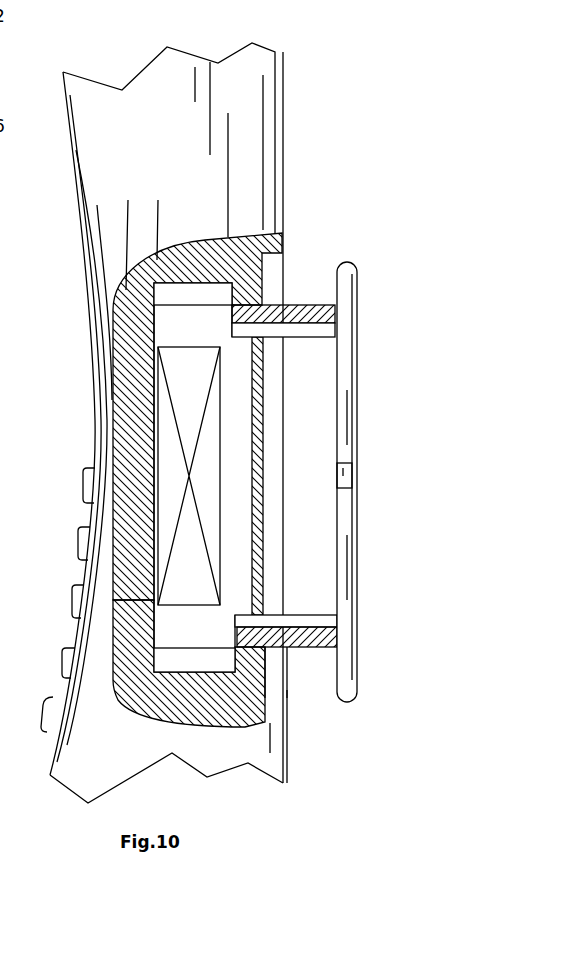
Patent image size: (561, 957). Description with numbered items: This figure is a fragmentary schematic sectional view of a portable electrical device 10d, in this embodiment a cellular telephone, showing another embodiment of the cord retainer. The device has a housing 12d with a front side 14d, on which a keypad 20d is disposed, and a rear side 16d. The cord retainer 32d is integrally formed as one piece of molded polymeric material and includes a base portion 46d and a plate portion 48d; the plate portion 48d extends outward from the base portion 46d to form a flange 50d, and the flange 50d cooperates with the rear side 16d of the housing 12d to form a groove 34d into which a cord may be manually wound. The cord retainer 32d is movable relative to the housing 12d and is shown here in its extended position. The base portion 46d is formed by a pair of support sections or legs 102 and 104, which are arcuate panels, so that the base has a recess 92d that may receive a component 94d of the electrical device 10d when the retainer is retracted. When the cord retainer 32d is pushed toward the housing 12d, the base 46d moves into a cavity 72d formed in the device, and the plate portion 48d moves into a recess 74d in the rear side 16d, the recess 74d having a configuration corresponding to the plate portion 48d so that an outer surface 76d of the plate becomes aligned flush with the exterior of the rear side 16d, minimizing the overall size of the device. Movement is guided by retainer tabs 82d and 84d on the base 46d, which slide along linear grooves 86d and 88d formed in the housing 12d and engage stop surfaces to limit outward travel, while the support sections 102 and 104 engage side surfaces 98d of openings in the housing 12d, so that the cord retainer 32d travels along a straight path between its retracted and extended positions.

The portable electrical device 10d is at (300, 72).
The housing 12d is at (268, 124).
The front side 14d is at (86, 226).
The rear side 16d is at (284, 163).
The keypad 20d is at (83, 481).
The cord retainer 32d is at (372, 453).
The groove 34d is at (307, 665).
The base portion 46d is at (330, 610).
The plate portion 48d is at (346, 523).
The flange 50d is at (330, 258).
The cavity 72d is at (187, 326).
The recess 74d is at (283, 695).
The outer surface 76d is at (358, 403).
The retainer tab 82d is at (242, 303).
The retainer tab 84d is at (243, 657).
The linear groove 86d is at (173, 296).
The linear groove 88d is at (173, 658).
The recess 92d is at (310, 435).
The component 94d is at (185, 398).
The side surfaces 98d is at (262, 347).
The support section 102 is at (305, 322).
The support section 104 is at (318, 648).